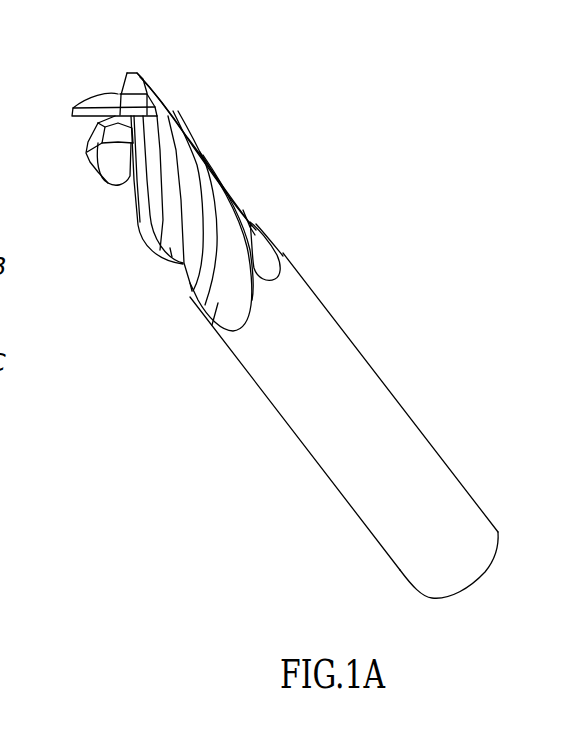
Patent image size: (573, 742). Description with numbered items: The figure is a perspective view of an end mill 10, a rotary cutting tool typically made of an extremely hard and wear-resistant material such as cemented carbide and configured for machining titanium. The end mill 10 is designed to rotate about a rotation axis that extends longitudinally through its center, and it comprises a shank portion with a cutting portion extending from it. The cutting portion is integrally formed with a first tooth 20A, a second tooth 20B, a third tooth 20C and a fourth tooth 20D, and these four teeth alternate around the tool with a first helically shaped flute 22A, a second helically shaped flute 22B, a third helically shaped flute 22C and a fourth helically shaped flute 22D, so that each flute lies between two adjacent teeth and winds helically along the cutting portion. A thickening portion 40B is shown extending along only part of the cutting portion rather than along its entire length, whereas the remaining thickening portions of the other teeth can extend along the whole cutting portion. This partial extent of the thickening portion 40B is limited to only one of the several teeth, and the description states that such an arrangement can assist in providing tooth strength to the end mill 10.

The end mill 10 is at (68, 51).
The first tooth 20A is at (96, 160).
The first helically shaped flute 22A is at (100, 178).
The second tooth 20B is at (148, 230).
The second helically shaped flute 22B is at (170, 255).
The third tooth 20C is at (188, 300).
The third helically shaped flute 22C is at (217, 304).
The fourth tooth 20D is at (250, 222).
The fourth helically shaped flute 22D is at (277, 267).
The thickening portion 40B is at (176, 112).